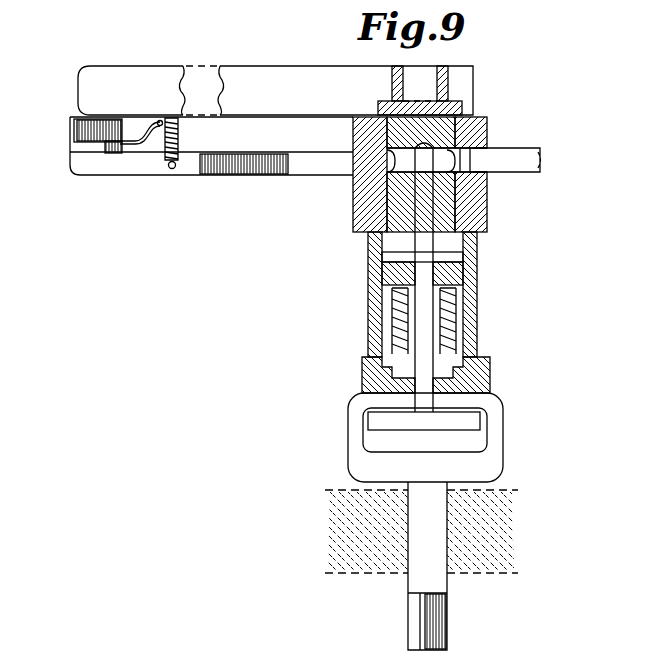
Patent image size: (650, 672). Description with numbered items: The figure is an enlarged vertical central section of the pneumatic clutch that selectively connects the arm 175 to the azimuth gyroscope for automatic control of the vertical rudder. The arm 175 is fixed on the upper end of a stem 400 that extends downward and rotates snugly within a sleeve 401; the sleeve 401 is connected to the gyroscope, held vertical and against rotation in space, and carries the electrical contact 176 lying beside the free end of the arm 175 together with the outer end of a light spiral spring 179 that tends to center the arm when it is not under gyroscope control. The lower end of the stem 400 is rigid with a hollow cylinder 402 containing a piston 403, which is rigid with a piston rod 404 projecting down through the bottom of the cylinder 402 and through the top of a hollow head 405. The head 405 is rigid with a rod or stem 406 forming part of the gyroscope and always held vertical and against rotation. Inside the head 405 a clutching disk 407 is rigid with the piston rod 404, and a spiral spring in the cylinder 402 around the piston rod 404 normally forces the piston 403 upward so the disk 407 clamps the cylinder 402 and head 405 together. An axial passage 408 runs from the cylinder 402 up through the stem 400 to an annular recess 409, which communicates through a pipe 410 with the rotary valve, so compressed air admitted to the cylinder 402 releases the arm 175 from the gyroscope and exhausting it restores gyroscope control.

The arm 175 is at (262, 80).
The electrical contact 176 is at (82, 150).
The spiral spring 179 is at (180, 132).
The stem 400 is at (470, 112).
The sleeve 401 is at (489, 128).
The hollow cylinder 402 is at (478, 268).
The piston 403 is at (382, 268).
The piston rod 404 is at (420, 310).
The hollow head 405 is at (500, 446).
The rod or stem 406 is at (432, 535).
The clutching disk 407 is at (390, 421).
The axial passage 408 is at (430, 212).
The annular recess 409 is at (366, 172).
The pipe 410 is at (528, 158).